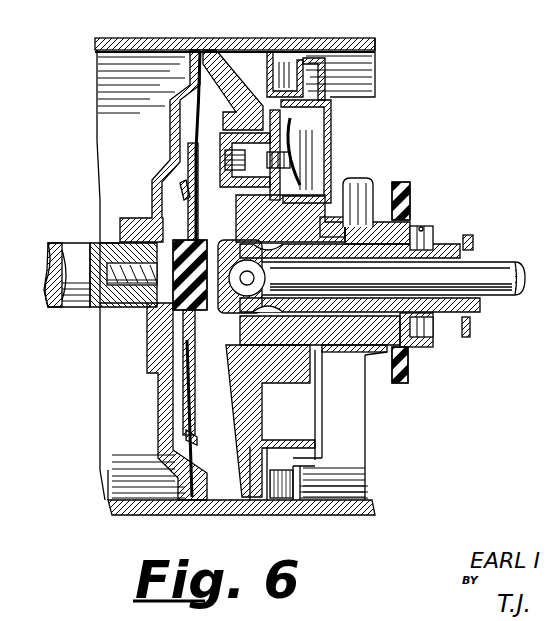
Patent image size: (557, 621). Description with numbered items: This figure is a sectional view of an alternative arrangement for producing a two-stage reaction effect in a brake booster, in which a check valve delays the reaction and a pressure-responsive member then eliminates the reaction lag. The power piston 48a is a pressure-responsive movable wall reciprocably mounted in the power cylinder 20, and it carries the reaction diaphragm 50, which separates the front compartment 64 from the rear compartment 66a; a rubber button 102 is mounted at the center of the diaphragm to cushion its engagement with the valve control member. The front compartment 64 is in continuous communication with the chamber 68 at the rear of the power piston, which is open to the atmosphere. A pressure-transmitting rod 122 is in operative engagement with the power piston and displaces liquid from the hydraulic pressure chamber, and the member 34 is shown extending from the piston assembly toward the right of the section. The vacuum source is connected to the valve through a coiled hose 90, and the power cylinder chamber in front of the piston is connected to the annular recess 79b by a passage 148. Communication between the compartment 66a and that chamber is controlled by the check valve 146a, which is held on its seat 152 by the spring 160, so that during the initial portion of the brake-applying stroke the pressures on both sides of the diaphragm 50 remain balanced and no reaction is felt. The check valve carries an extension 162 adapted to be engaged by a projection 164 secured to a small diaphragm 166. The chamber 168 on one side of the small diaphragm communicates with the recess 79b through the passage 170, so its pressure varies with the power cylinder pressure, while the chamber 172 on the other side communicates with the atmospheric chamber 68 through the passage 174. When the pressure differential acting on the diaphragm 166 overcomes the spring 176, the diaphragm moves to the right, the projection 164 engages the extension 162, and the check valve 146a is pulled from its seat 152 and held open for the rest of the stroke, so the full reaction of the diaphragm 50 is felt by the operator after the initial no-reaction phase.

The power cylinder 20 is at (330, 508).
The shaft 34 is at (495, 273).
The piston 48a is at (388, 41).
The reaction diaphragm 50 is at (180, 373).
The front compartment 64 is at (182, 387).
The compartment 66a is at (212, 437).
The chamber 68 is at (350, 477).
The recess 79b is at (322, 350).
The coiled hose 90 is at (410, 203).
The rubber button 102 is at (173, 300).
The rod 122 is at (53, 305).
The check valve 146a is at (238, 122).
The passage 148 is at (245, 402).
The seat 152 is at (215, 137).
The spring 160 is at (242, 193).
The extension 162 is at (268, 96).
The projection 164 is at (285, 165).
The small diaphragm 166 is at (300, 138).
The chamber 168 is at (330, 123).
The passage 170 is at (358, 210).
The chamber 172 is at (291, 157).
The passage 174 is at (327, 118).
The spring 176 is at (330, 160).